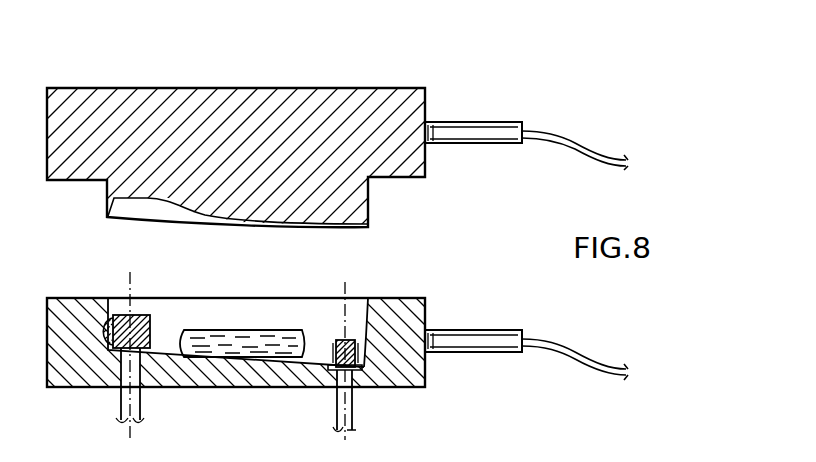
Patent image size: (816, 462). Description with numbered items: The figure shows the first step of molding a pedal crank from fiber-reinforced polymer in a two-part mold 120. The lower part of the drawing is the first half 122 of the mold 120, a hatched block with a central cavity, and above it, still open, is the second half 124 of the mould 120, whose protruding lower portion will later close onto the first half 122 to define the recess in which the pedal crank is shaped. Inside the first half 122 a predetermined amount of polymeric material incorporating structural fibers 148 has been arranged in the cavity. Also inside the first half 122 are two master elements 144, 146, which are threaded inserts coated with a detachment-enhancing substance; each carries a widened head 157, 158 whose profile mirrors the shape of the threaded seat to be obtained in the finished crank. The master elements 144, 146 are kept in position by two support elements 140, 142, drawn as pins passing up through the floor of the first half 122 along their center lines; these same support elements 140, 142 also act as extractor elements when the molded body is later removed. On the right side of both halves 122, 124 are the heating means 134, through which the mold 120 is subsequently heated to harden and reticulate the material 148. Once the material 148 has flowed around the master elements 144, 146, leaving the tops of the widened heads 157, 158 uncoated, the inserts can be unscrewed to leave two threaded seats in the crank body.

The mold 120 is at (499, 80).
The first half of the mold 122 is at (437, 306).
The second half of the mould 124 is at (433, 166).
The heating means 134 is at (511, 145).
The support element 140 is at (120, 405).
The support element 142 is at (337, 410).
The master element 144 is at (150, 332).
The master element 146 is at (346, 340).
The polymeric material incorporating structural fibers 148 is at (258, 336).
The widened head 157 is at (150, 314).
The widened head 158 is at (373, 386).